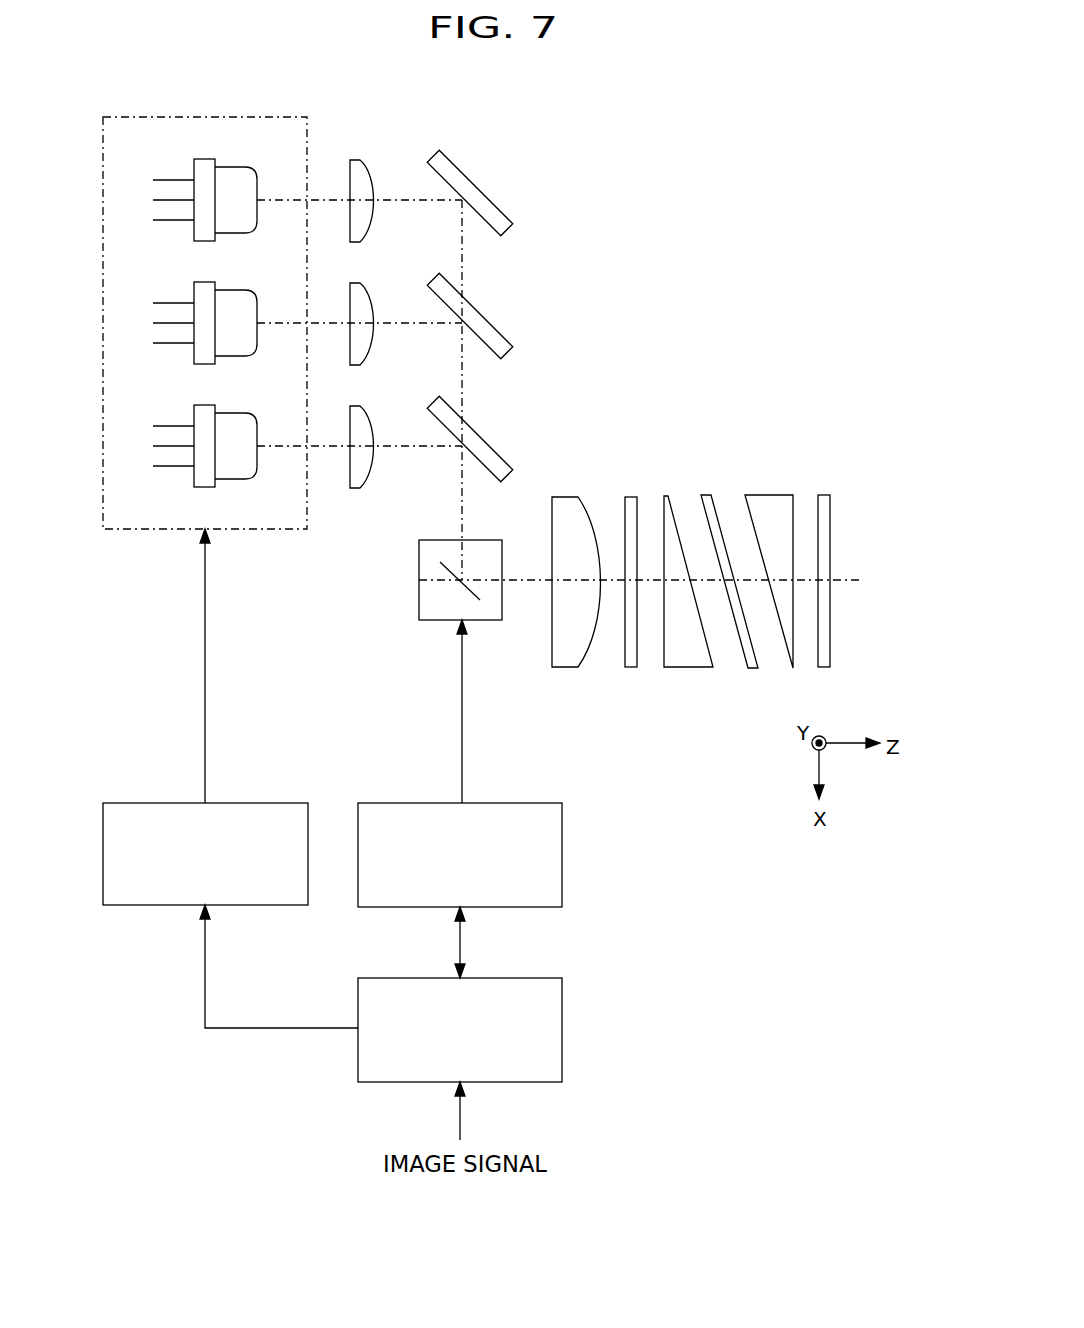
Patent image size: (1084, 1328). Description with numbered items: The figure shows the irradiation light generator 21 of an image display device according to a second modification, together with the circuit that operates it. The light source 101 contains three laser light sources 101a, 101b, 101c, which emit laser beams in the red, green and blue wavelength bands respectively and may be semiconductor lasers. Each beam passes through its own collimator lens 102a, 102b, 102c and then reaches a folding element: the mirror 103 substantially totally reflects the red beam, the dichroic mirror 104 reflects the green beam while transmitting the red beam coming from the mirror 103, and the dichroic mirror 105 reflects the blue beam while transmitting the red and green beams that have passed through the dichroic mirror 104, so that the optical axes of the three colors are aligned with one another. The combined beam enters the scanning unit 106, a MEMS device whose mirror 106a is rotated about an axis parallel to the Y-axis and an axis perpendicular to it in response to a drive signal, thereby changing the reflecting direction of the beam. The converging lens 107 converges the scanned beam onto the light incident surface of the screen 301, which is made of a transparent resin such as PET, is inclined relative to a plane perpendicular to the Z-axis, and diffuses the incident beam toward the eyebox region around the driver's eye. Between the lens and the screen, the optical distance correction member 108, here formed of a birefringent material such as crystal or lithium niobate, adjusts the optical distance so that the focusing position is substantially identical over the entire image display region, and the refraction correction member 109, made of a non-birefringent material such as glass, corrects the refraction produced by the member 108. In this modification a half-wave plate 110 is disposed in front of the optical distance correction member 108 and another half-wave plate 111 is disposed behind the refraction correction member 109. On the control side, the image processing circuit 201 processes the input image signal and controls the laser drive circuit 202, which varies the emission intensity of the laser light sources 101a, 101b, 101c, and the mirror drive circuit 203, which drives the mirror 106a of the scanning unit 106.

The irradiation light generator 21 is at (652, 280).
The light source 101 is at (156, 534).
The laser light source 101a is at (241, 168).
The laser light source 101b is at (241, 291).
The laser light source 101c is at (241, 414).
The collimator lens 102a is at (371, 170).
The collimator lens 102b is at (371, 292).
The collimator lens 102c is at (371, 415).
The mirror 103 is at (489, 202).
The dichroic mirror 104 is at (491, 323).
The dichroic mirror 105 is at (491, 446).
The scanning unit 106 is at (431, 560).
The mirror 106a is at (443, 571).
The converging lens 107 is at (567, 495).
The optical distance correction member 108 is at (684, 669).
The refraction correction member 109 is at (772, 494).
The half-wave plate 110 is at (631, 495).
The half-wave plate 111 is at (824, 494).
The screen 301 is at (704, 494).
The image processing circuit 201 is at (522, 978).
The laser drive circuit 202 is at (283, 803).
The mirror drive circuit 203 is at (536, 803).